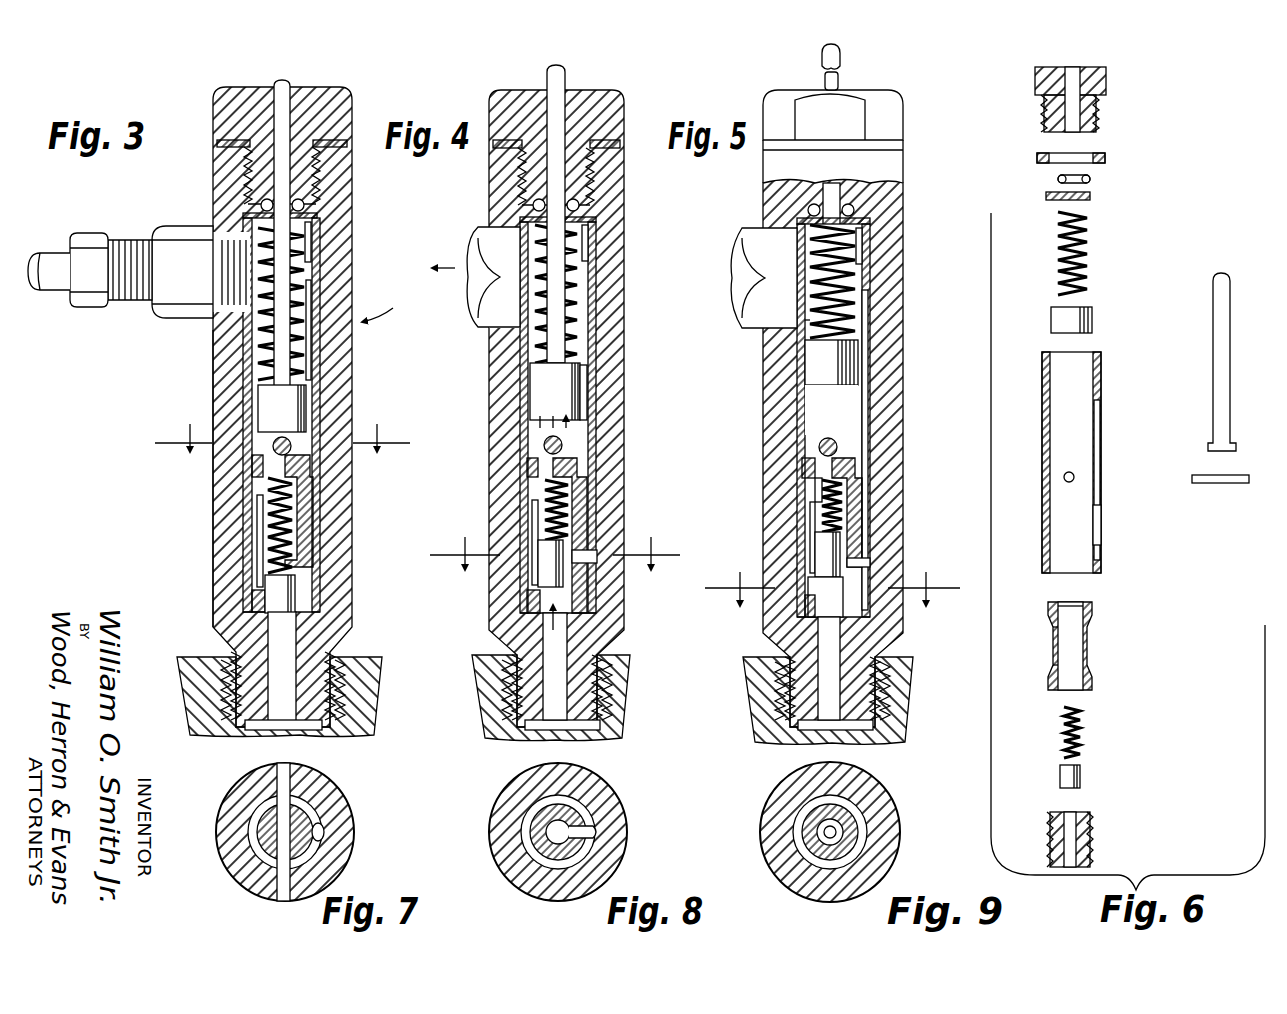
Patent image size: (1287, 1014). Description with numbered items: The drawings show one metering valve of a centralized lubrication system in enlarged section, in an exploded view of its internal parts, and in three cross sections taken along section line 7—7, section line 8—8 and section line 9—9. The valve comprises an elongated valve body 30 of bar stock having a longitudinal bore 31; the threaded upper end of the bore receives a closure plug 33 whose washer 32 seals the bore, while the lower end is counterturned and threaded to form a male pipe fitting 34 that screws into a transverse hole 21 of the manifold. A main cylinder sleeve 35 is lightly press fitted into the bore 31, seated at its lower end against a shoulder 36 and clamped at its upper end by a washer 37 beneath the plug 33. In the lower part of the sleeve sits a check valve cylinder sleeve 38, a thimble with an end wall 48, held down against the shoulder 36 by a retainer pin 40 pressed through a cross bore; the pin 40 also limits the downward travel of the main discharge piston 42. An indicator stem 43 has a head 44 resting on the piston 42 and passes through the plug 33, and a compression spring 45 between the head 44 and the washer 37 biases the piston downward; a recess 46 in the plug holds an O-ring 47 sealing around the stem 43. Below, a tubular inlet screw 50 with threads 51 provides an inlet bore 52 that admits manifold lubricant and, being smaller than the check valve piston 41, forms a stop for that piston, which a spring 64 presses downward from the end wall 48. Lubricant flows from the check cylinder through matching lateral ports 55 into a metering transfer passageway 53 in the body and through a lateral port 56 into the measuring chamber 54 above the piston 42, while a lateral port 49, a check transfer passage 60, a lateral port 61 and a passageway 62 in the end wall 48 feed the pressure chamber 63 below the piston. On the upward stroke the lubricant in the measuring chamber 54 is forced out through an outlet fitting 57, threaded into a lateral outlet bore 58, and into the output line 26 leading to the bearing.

In FIG. 3, the section line 7— 7 is at (282, 369).
In FIG. 4, the section line 8— 8 is at (555, 542).
In FIG. 5, the section line 9— 9 is at (832, 578).
In FIG. 3, the transverse hole 21 is at (300, 738).
In FIG. 5, the transverse hole 21 is at (828, 700).
In FIG. 3, the output line 26 is at (48, 255).
In FIG. 3, the valve body 30 is at (213, 348).
In FIG. 3, the longitudinal bore 31 is at (215, 372).
In FIG. 3, the washer 32 is at (217, 144).
In FIG. 4, the washer 32 is at (556, 144).
In FIG. 6, the washer 32 is at (1105, 158).
In FIG. 3, the closure plug 33 is at (250, 170).
In FIG. 6, the closure plug 33 is at (1096, 110).
In FIG. 3, the male pipe fitting 34 is at (332, 645).
In FIG. 3, the main cylinder sleeve 35 is at (246, 512).
In FIG. 4, the main cylinder sleeve 35 is at (558, 417).
In FIG. 5, the main cylinder sleeve 35 is at (833, 420).
In FIG. 6, the main cylinder sleeve 35 is at (1101, 415).
In FIG. 4, the shoulder 36 is at (495, 630).
In FIG. 5, the shoulder 36 is at (880, 645).
In FIG. 3, the washer 37 is at (318, 216).
In FIG. 4, the washer 37 is at (590, 218).
In FIG. 5, the washer 37 is at (833, 221).
In FIG. 6, the washer 37 is at (1090, 196).
In FIG. 3, the check valve cylinder sleeve 38 is at (313, 566).
In FIG. 4, the check valve cylinder sleeve 38 is at (562, 535).
In FIG. 5, the check valve cylinder sleeve 38 is at (847, 512).
In FIG. 6, the check valve cylinder sleeve 38 is at (1092, 625).
In FIG. 3, the retainer pin 40 is at (291, 448).
In FIG. 5, the retainer pin 40 is at (828, 447).
In FIG. 6, the retainer pin 40 is at (1210, 485).
In FIG. 7, the retainer pin 40 is at (300, 805).
In FIG. 3, the check valve piston 41 is at (270, 595).
In FIG. 4, the check valve piston 41 is at (560, 540).
In FIG. 5, the check valve piston 41 is at (827, 554).
In FIG. 6, the check valve piston 41 is at (1082, 780).
In FIG. 3, the main discharge piston 42 is at (282, 408).
In FIG. 4, the main discharge piston 42 is at (555, 388).
In FIG. 5, the main discharge piston 42 is at (810, 385).
In FIG. 6, the main discharge piston 42 is at (1092, 320).
In FIG. 3, the indicator stem 43 is at (282, 233).
In FIG. 4, the indicator stem 43 is at (562, 75).
In FIG. 5, the indicator stem 43 is at (841, 54).
In FIG. 6, the indicator stem 43 is at (1213, 352).
In FIG. 4, the head 44 is at (560, 365).
In FIG. 3, the compression spring 45 is at (281, 304).
In FIG. 4, the compression spring 45 is at (577, 280).
In FIG. 5, the compression spring 45 is at (858, 255).
In FIG. 6, the compression spring 45 is at (1087, 262).
In FIG. 4, the recess 46 is at (600, 170).
In FIG. 3, the O-ring 47 is at (282, 205).
In FIG. 4, the O-ring 47 is at (578, 205).
In FIG. 5, the O-ring 47 is at (855, 208).
In FIG. 6, the O-ring 47 is at (1090, 179).
In FIG. 4, the end wall 48 is at (562, 445).
In FIG. 3, the lateral port 49 is at (260, 582).
In FIG. 5, the lateral port 49 is at (810, 600).
In FIG. 6, the lateral port 49 is at (1050, 665).
In FIG. 3, the inlet screw 50 is at (325, 700).
In FIG. 4, the inlet screw 50 is at (597, 655).
In FIG. 5, the inlet screw 50 is at (832, 693).
In FIG. 6, the inlet screw 50 is at (1090, 840).
In FIG. 4, the threads 51 is at (600, 675).
In FIG. 3, the inlet bore 52 is at (275, 652).
In FIG. 4, the inlet bore 52 is at (560, 680).
In FIG. 5, the inlet bore 52 is at (829, 668).
In FIG. 3, the metering transfer passageway 53 is at (320, 380).
In FIG. 4, the metering transfer passageway 53 is at (585, 243).
In FIG. 5, the metering transfer passageway 53 is at (868, 380).
In FIG. 3, the measuring chamber 54 is at (300, 358).
In FIG. 5, the measuring chamber 54 is at (810, 320).
In FIG. 5, the lateral ports 55 is at (865, 560).
In FIG. 6, the lateral ports 55 is at (1101, 520).
In FIG. 5, the lateral port 56 is at (868, 300).
In FIG. 6, the lateral port 56 is at (1101, 395).
In FIG. 3, the outlet fitting 57 is at (160, 232).
In FIG. 4, the lateral outlet bore 58 is at (492, 228).
In FIG. 5, the lateral outlet bore 58 is at (775, 228).
In FIG. 6, the lateral outlet bore 58 is at (1043, 395).
In FIG. 3, the check transfer passage 60 is at (258, 545).
In FIG. 4, the check transfer passage 60 is at (535, 542).
In FIG. 5, the check transfer passage 60 is at (812, 535).
In FIG. 5, the lateral port 61 is at (808, 490).
In FIG. 6, the lateral port 61 is at (1052, 617).
In FIG. 3, the passageway 62 is at (257, 466).
In FIG. 4, the passageway 62 is at (532, 467).
In FIG. 5, the passageway 62 is at (806, 465).
In FIG. 6, the passageway 62 is at (1063, 602).
In FIG. 5, the pressure chamber 63 is at (830, 420).
In FIG. 3, the spring 64 is at (280, 525).
In FIG. 4, the spring 64 is at (556, 510).
In FIG. 5, the spring 64 is at (842, 505).
In FIG. 6, the spring 64 is at (1080, 735).